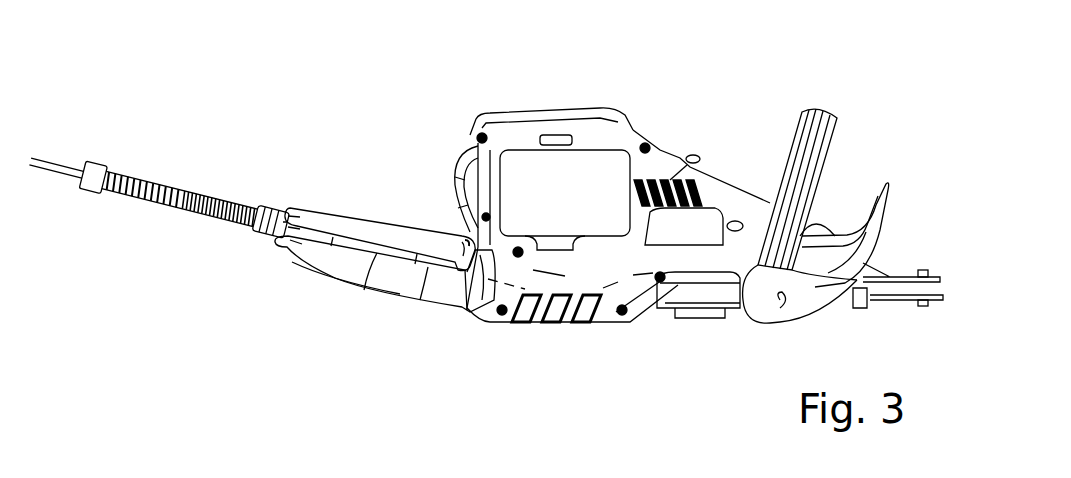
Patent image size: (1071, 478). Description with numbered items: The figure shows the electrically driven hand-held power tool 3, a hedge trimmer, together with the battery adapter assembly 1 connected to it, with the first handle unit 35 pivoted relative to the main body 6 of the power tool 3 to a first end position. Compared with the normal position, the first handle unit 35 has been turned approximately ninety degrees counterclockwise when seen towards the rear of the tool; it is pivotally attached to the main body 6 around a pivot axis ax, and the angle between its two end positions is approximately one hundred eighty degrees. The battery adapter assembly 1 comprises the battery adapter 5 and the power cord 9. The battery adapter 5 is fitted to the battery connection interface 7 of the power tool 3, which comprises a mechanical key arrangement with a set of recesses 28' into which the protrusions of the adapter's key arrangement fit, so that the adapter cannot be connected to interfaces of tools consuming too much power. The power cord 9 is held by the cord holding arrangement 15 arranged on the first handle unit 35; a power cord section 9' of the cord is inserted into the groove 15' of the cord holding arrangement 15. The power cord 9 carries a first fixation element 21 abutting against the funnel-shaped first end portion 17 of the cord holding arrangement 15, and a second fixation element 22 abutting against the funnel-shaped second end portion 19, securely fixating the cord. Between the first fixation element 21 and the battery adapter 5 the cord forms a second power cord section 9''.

The battery adapter assembly 1 is at (188, 321).
The electrically driven hand-held power tool 3 is at (774, 83).
The battery adapter 5 is at (560, 195).
The main body 6 is at (597, 277).
The battery connection interface 7 is at (578, 147).
The power cord 9 is at (143, 166).
The power cord section 9' is at (450, 302).
The second power cord section 9'' is at (450, 157).
The cord holding arrangement 15 is at (370, 298).
The groove 15' is at (386, 299).
The first end portion 17 is at (460, 236).
The second end portion 19 is at (283, 207).
The first fixation element 21 is at (463, 237).
The second fixation element 22 is at (281, 227).
The mechanical key arrangement / recesses 28' is at (668, 129).
The first handle unit 35 is at (345, 222).
The pivot axis ax is at (500, 283).